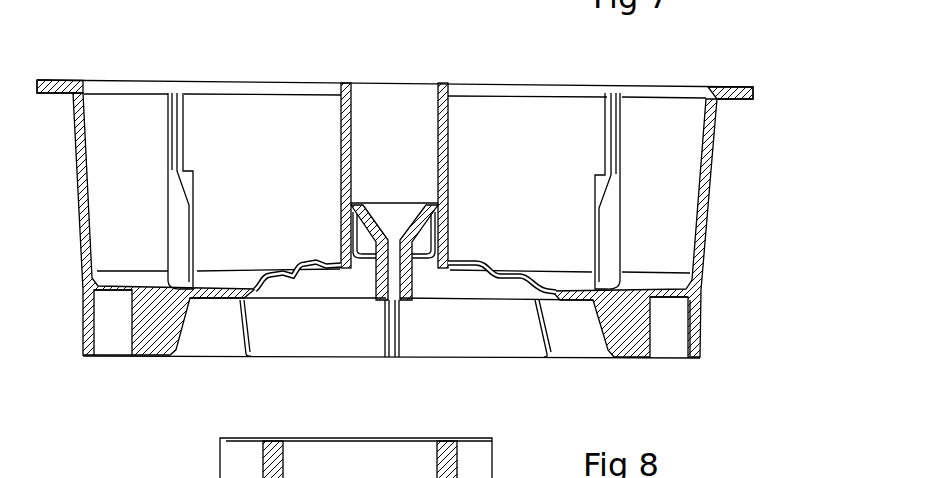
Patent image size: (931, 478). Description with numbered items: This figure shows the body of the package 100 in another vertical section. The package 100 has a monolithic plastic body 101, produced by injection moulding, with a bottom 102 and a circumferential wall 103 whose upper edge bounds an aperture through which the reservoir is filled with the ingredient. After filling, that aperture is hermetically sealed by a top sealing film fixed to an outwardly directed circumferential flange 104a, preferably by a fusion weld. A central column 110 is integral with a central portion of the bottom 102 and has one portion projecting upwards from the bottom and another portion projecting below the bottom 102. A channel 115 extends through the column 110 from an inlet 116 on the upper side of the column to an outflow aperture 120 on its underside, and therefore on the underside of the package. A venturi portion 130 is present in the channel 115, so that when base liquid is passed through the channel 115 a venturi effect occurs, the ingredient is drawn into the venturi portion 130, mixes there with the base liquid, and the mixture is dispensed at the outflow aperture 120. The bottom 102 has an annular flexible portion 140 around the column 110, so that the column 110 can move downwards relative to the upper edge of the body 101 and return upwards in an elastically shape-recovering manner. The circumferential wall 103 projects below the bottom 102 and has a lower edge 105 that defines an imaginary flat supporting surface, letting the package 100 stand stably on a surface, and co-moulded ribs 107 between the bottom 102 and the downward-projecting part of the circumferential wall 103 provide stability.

In FIG. 7, the package 100 is at (425, 212).
In FIG. 7, the monolithic plastic body 101 is at (82, 337).
In FIG. 7, the bottom 102 is at (654, 310).
In FIG. 7, the circumferential wall 103 is at (706, 254).
In FIG. 7, the outwardly directed circumferential flange 104a is at (745, 83).
In FIG. 7, the lower edge 105 is at (702, 372).
In FIG. 7, the co-moulded ribs 107 is at (223, 345).
In FIG. 7, the central column 110 is at (433, 175).
In FIG. 8, the central column 110 is at (389, 458).
In FIG. 7, the channel 115 is at (420, 165).
In FIG. 7, the inlet 116 is at (411, 70).
In FIG. 7, the outflow aperture 120 is at (381, 316).
In FIG. 7, the venturi portion 130 is at (349, 252).
In FIG. 7, the annular flexible portion 140 is at (515, 261).